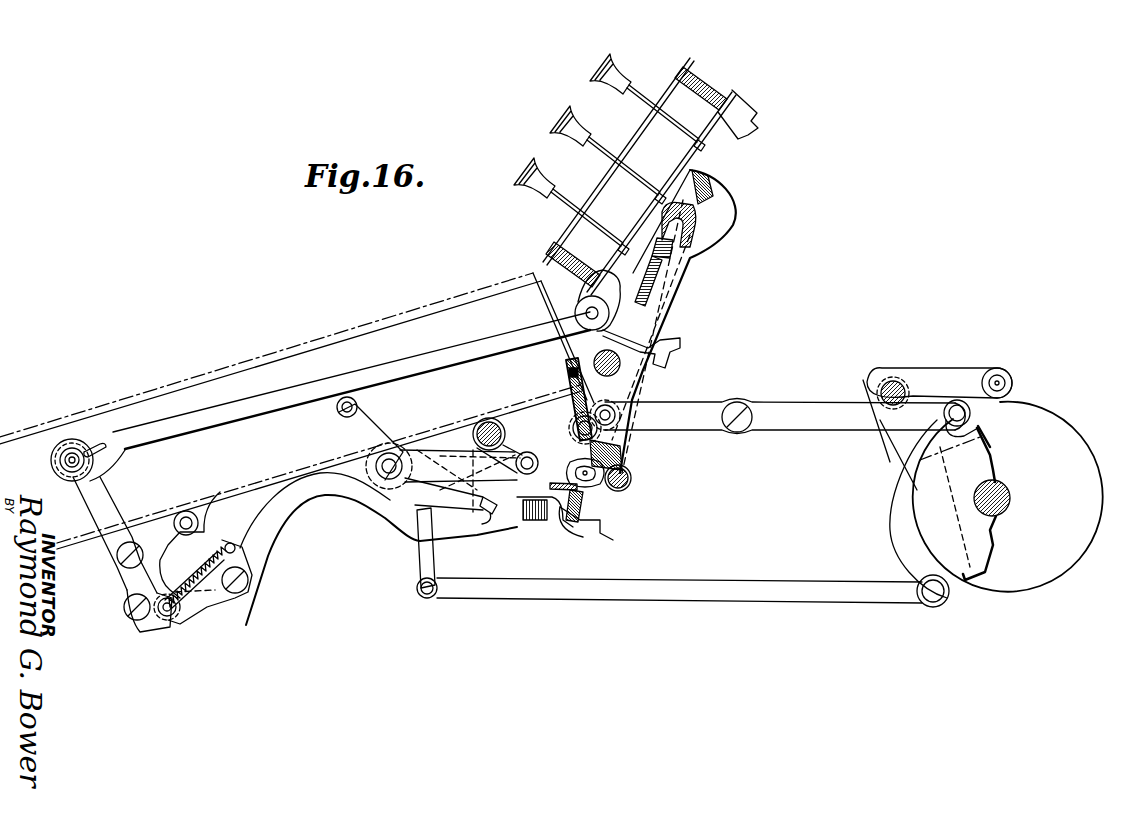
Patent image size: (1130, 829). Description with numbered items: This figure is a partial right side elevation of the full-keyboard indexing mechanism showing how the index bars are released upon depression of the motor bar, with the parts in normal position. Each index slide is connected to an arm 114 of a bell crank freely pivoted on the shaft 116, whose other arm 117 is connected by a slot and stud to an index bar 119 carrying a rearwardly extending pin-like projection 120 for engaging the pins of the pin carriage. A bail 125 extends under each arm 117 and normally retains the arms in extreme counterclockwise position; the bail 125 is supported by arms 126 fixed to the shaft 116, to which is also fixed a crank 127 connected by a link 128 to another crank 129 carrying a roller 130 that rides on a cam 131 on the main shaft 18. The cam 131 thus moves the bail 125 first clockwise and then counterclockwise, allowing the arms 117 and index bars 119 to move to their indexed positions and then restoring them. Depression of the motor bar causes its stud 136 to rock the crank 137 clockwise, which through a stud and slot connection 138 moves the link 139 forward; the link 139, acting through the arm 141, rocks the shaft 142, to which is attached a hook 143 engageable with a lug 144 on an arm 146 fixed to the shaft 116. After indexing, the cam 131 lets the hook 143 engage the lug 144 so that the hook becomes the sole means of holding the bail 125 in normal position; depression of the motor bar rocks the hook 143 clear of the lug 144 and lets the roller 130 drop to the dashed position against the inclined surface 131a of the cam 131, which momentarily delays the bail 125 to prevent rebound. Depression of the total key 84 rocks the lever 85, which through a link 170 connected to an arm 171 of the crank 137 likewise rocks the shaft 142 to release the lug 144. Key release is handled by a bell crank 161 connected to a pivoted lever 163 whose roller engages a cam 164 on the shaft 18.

The total key 84 is at (557, 125).
The lever 85 is at (718, 240).
The pin-like projection 120 is at (680, 327).
The bell crank 161 is at (612, 400).
The link 170 is at (458, 350).
The stud 136 is at (207, 515).
The arm 171 is at (97, 512).
The stud and slot connection 138 is at (176, 626).
The link 139 is at (210, 605).
The crank 137 is at (162, 535).
The arm 114 is at (367, 430).
The shaft 116 is at (391, 464).
The shaft 142 is at (486, 421).
The arm 141 is at (507, 443).
The arm 117 is at (557, 470).
The hook 143 is at (483, 513).
The arm 146 is at (422, 472).
The lug 144 is at (510, 512).
The index bar 119 is at (637, 467).
The bail 125 is at (590, 510).
The arms 126 is at (583, 537).
The crank 127 is at (415, 565).
The link 128 is at (690, 593).
The pivoted lever 163 is at (795, 410).
The roller 130 is at (990, 370).
The inclined surface 131a is at (980, 428).
The crank 129 is at (897, 468).
The cam 131 is at (1043, 422).
The main shaft 18 is at (1010, 497).
The cam 164 is at (973, 545).